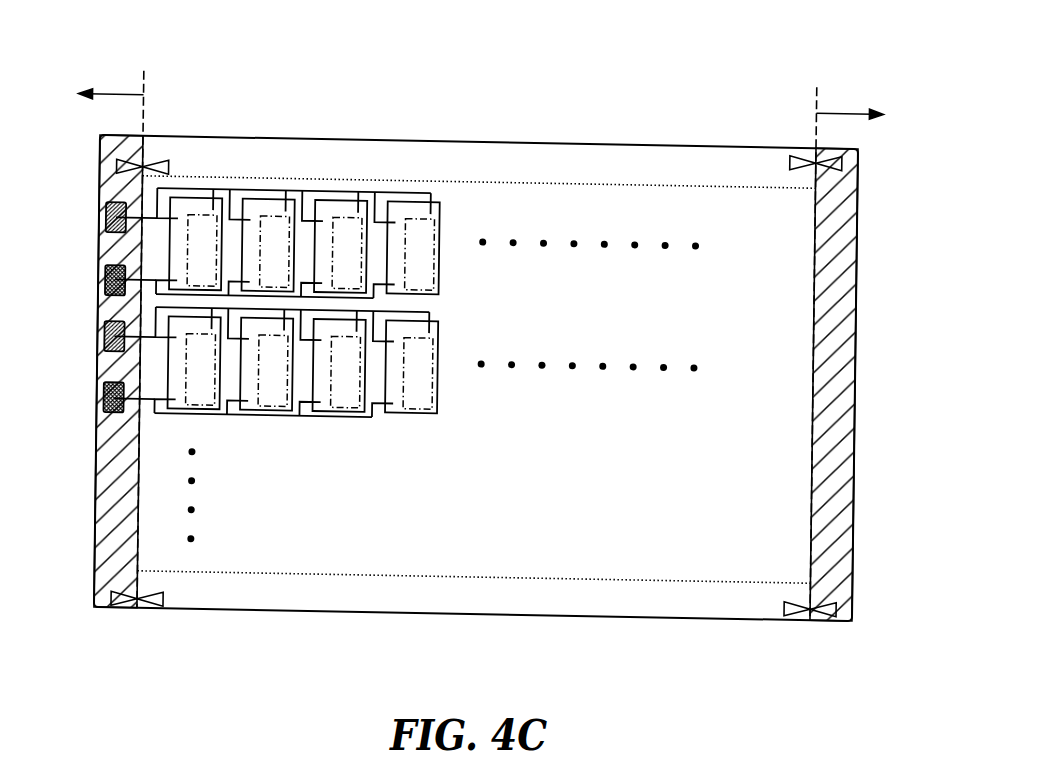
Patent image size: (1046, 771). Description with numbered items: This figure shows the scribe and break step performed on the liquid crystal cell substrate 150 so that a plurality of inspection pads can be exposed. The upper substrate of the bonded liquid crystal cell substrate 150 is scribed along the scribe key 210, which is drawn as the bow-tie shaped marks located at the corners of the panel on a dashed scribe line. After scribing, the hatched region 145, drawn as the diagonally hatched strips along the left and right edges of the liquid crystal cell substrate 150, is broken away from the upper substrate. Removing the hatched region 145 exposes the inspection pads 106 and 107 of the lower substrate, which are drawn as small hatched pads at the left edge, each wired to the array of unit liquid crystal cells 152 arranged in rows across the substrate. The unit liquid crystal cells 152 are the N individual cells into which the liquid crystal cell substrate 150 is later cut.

The liquid crystal cell substrate 150 is at (631, 115).
The hatched region 145 is at (110, 555).
The scribe key 210 is at (168, 173).
The unit liquid crystal cell 152 is at (430, 242).
The inspection pad 106 is at (107, 217).
The inspection pad 107 is at (107, 283).